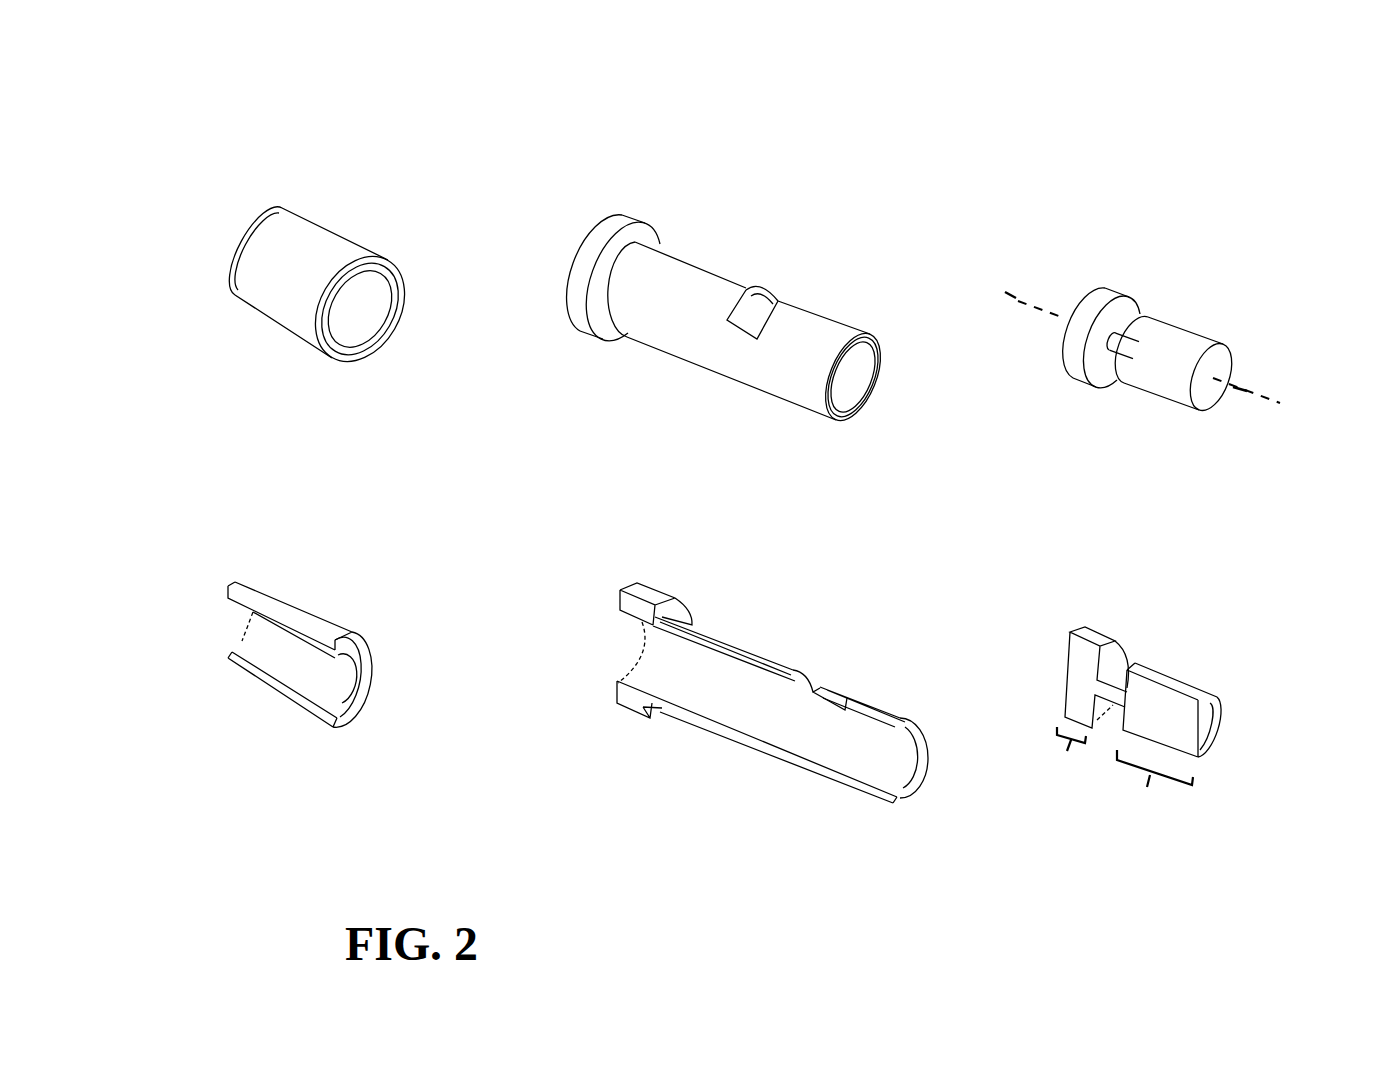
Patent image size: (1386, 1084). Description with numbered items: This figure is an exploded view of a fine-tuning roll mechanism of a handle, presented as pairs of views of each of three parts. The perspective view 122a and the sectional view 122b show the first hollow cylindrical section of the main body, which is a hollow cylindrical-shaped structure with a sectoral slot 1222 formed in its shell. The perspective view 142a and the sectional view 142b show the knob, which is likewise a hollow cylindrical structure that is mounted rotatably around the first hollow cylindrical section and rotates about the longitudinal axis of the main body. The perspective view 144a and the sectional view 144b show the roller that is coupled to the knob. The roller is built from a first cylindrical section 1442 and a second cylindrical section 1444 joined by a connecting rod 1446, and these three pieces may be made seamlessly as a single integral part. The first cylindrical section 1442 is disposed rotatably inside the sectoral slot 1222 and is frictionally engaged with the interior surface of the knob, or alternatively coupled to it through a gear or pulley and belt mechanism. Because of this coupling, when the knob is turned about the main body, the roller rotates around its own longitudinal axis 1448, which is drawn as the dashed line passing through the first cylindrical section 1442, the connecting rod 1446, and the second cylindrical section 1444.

The perspective view of knob 142a is at (227, 178).
The perspective view of hollow cylindrical section 122a is at (590, 162).
The sectoral slot 1222 is at (761, 298).
The perspective view of roller 144a is at (1191, 263).
The longitudinal axis of roller 1448 is at (1010, 296).
The sectional view of knob 142b is at (198, 575).
The sectional view of hollow cylindrical section 122b is at (563, 575).
The sectional view of roller 144b is at (1201, 758).
The first cylindrical section 1442 is at (1082, 714).
The second cylindrical section 1444 is at (1166, 751).
The connecting rod 1446 is at (1114, 676).